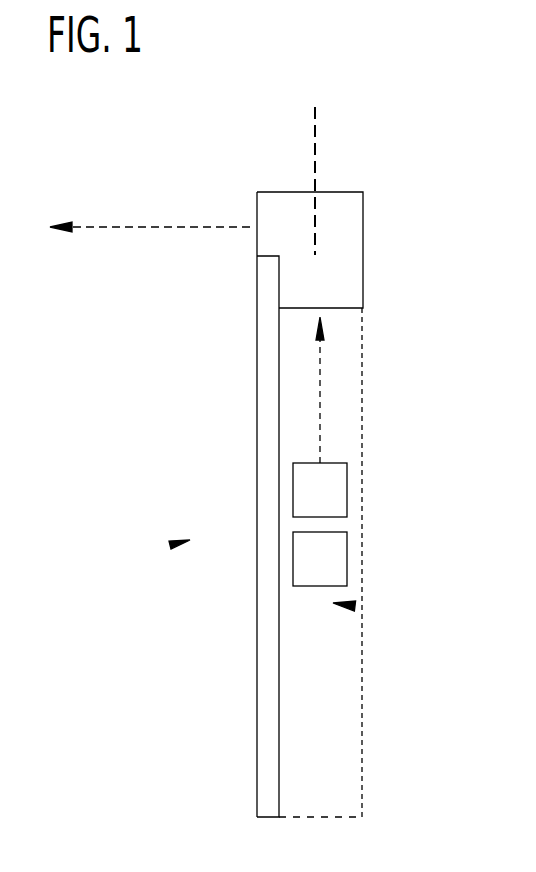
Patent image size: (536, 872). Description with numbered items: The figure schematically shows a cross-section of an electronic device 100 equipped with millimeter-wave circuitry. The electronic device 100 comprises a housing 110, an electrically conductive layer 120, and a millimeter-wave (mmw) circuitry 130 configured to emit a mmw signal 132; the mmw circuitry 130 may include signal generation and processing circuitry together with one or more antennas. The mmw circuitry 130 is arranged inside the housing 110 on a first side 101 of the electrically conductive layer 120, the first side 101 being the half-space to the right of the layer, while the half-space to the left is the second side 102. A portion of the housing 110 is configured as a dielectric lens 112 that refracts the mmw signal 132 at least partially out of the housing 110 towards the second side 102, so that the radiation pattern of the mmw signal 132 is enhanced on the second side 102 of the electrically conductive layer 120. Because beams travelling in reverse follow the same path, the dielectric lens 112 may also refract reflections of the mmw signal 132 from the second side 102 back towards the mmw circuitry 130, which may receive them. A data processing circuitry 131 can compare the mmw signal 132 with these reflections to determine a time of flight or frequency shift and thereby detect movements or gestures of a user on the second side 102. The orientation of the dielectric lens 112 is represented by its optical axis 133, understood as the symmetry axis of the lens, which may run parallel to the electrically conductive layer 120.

The electronic device 100 is at (93, 147).
The first side 101 is at (355, 606).
The second side 102 is at (170, 545).
The housing 110 is at (362, 676).
The dielectric lens 112 is at (365, 248).
The electrically conductive layer 120 is at (257, 676).
The millimeter-wave circuitry 130 is at (337, 492).
The data processing circuitry 131 is at (337, 558).
The mmw signal 132 is at (165, 227).
The optical axis 133 is at (315, 128).